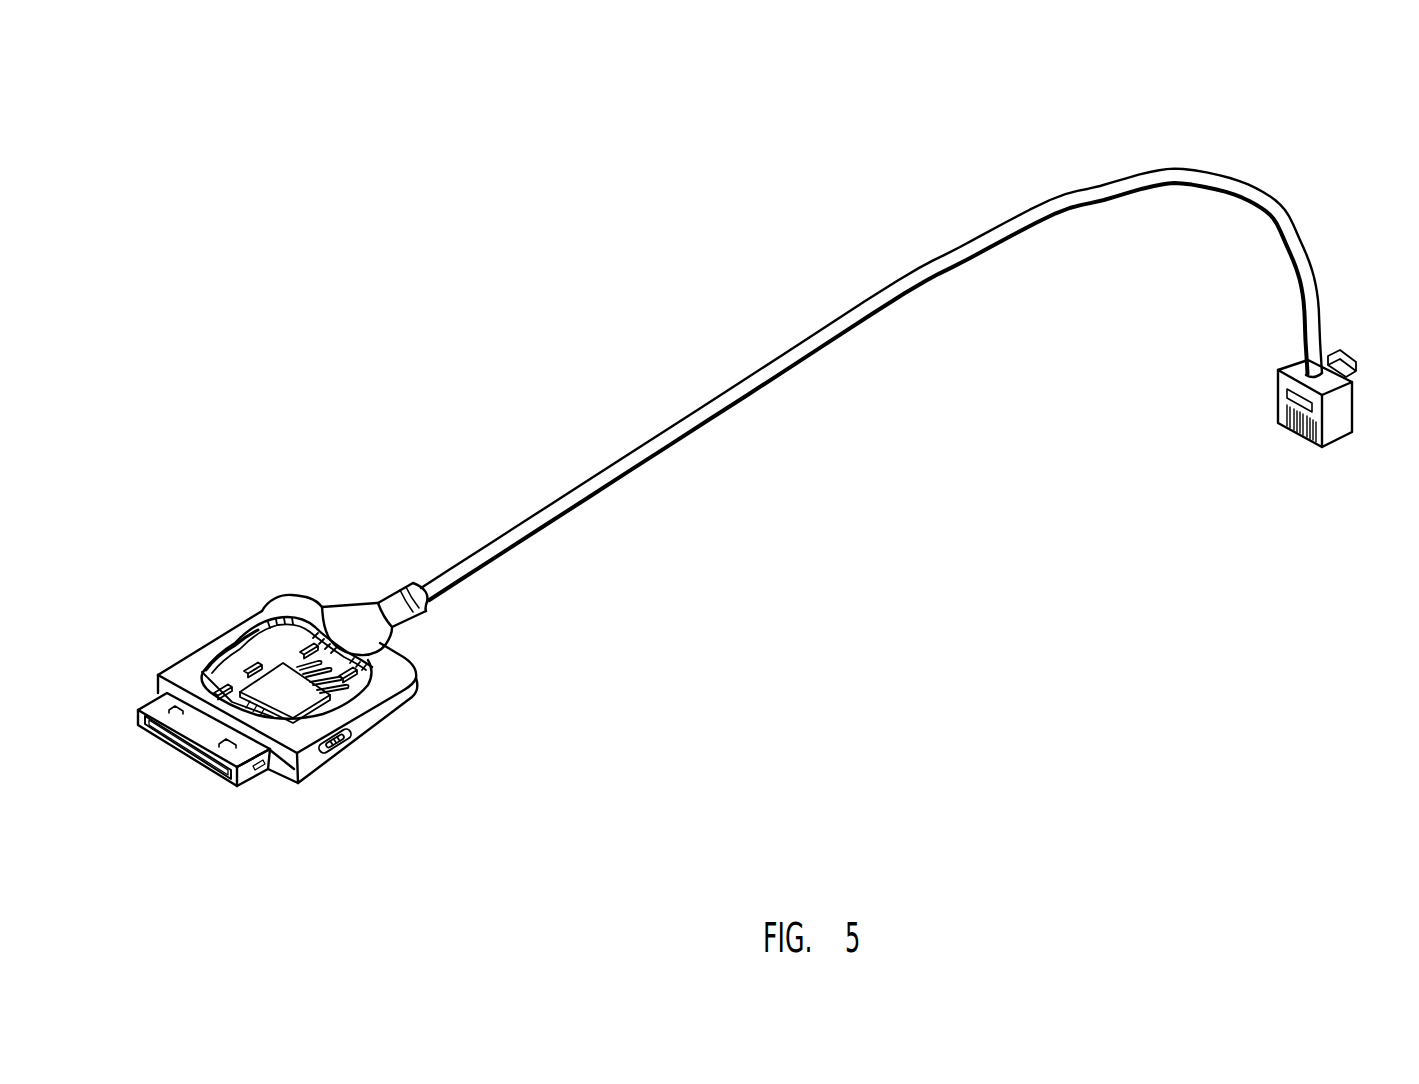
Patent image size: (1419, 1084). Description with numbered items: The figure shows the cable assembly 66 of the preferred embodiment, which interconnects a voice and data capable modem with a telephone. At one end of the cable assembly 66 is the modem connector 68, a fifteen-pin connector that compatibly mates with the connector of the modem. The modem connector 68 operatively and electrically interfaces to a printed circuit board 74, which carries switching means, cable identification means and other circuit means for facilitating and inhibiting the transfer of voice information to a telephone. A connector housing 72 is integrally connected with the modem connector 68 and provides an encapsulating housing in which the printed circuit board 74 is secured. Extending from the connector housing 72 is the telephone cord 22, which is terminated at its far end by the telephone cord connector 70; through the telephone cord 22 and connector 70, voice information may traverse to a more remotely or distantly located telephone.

The telephone cord 22 is at (1237, 177).
The cable assembly 66 is at (674, 318).
The modem connector 68 is at (145, 711).
The telephone cord connector 70 is at (1332, 430).
The connector housing 72 is at (290, 604).
The printed circuit board 74 is at (283, 653).